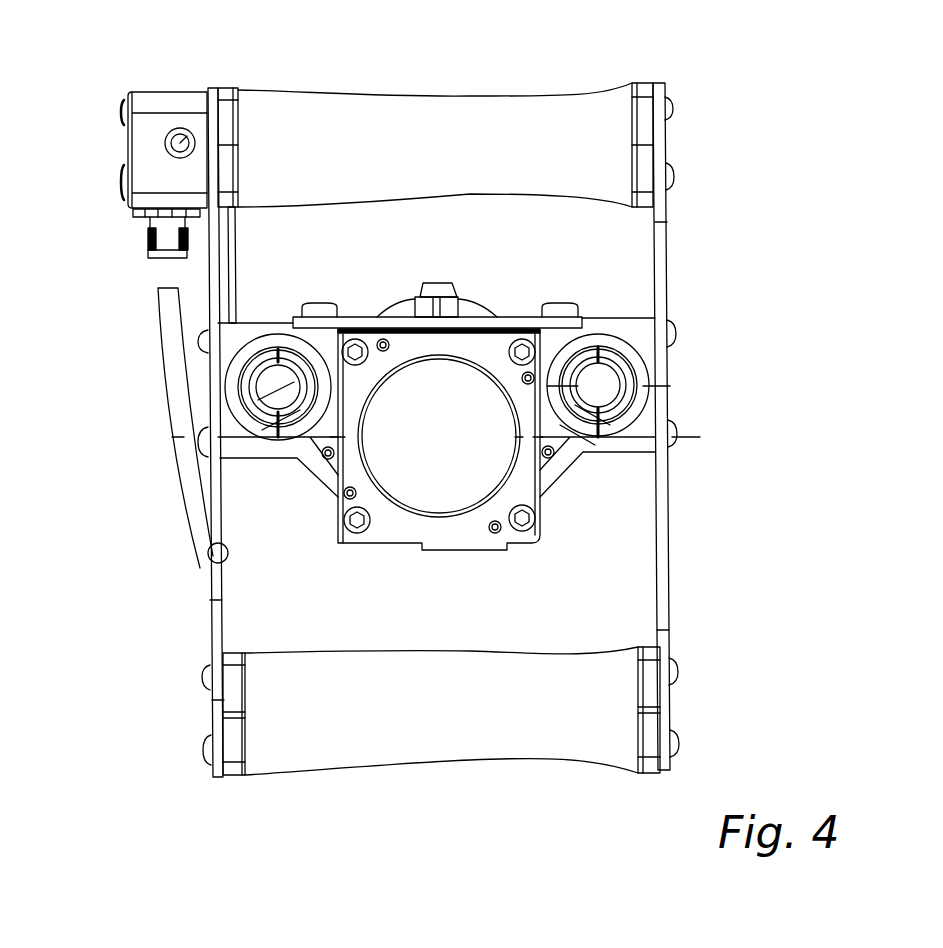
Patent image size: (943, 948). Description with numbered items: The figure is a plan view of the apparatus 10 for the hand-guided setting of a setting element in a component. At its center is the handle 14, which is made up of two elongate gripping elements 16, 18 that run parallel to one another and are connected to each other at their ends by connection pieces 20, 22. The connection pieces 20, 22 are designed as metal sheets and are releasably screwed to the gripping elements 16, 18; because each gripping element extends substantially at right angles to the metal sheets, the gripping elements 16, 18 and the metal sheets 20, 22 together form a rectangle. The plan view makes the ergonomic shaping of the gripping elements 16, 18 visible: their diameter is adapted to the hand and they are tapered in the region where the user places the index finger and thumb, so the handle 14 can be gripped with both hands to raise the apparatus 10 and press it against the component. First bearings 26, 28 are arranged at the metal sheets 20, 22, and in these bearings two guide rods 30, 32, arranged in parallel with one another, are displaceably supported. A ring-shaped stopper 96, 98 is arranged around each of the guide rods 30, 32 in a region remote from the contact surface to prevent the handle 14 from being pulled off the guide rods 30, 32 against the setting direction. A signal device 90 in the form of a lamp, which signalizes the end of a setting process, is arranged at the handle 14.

The apparatus 10 is at (690, 70).
The handle 14 is at (314, 768).
The gripping element 16 is at (430, 728).
The gripping element 18 is at (420, 123).
The connection piece 20 is at (665, 565).
The connection piece 22 is at (216, 612).
The first bearing 26 is at (643, 328).
The first bearing 28 is at (224, 410).
The guide rod 30 is at (608, 377).
The guide rod 32 is at (270, 385).
The signal device 90 is at (165, 143).
The ring-shaped stopper 96 is at (625, 420).
The ring-shaped stopper 98 is at (247, 420).